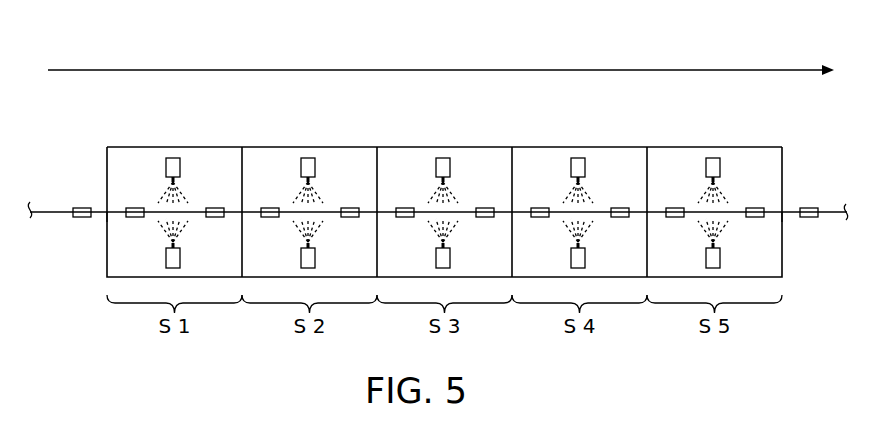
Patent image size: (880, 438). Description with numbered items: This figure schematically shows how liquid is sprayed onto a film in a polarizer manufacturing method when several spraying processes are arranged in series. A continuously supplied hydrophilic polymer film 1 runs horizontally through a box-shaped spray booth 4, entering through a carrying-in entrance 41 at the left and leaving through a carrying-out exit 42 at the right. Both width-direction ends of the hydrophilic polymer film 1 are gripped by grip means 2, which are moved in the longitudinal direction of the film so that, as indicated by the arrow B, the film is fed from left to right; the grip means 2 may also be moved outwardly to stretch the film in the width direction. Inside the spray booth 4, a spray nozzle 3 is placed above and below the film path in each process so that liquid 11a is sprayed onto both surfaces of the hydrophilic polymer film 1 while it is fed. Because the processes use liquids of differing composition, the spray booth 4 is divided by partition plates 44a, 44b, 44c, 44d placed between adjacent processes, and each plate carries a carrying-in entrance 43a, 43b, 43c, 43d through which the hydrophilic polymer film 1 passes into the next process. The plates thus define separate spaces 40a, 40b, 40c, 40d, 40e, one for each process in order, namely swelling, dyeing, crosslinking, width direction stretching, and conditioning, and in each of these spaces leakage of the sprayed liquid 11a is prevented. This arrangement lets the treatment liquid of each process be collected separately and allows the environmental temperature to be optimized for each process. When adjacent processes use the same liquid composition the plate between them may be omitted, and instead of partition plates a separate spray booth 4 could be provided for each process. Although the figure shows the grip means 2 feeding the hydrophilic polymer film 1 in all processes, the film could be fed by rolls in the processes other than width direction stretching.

The hydrophilic polymer film 1 is at (55, 215).
The grip means 2 is at (84, 208).
The spray nozzle 3 is at (181, 170).
The spray booth 4 is at (784, 152).
The liquid 11a is at (170, 181).
The space 40a is at (175, 147).
The space 40b is at (310, 147).
The space 40c is at (445, 147).
The space 40d is at (580, 147).
The space 40e is at (715, 147).
The carrying-in entrance 41 is at (107, 218).
The carrying-out exit 42 is at (783, 218).
The carrying-in entrance 43a is at (243, 216).
The carrying-in entrance 43b is at (378, 216).
The carrying-in entrance 43c is at (513, 216).
The carrying-in entrance 43d is at (648, 216).
The partition plate 44a is at (245, 147).
The partition plate 44b is at (380, 147).
The partition plate 44c is at (515, 147).
The partition plate 44d is at (650, 147).
The arrow B is at (440, 70).